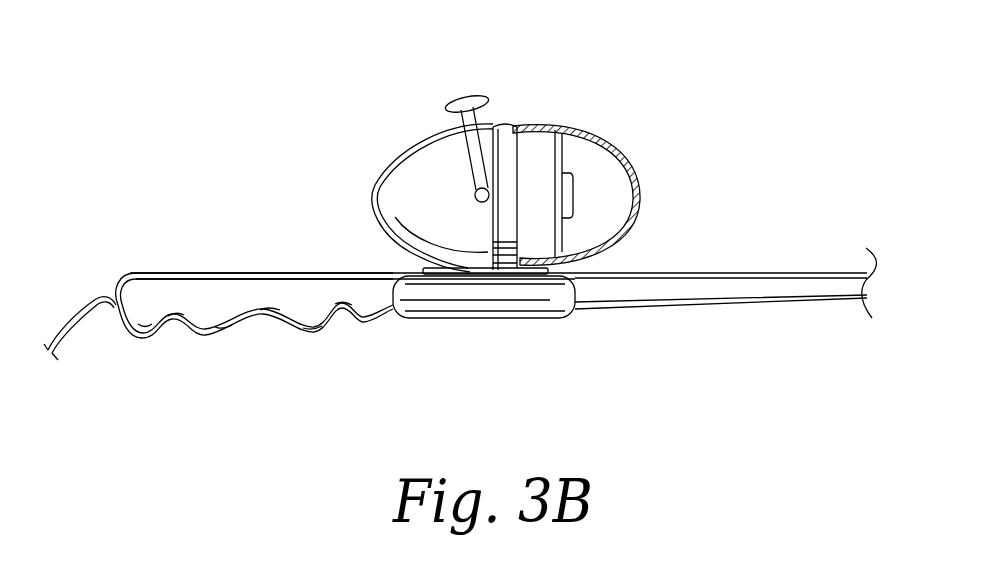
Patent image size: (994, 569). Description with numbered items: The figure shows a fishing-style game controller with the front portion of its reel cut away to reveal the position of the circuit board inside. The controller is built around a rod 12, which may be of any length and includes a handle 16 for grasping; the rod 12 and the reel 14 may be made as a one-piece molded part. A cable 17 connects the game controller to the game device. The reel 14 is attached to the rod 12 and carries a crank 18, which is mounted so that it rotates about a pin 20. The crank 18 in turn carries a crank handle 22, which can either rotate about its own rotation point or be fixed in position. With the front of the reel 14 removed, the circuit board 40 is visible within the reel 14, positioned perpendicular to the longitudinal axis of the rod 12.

The rod 12 is at (710, 285).
The reel 14 is at (507, 142).
The handle 16 is at (268, 293).
The cable 17 is at (92, 298).
The crank 18 is at (477, 152).
The pin 20 is at (481, 204).
The crank handle 22 is at (463, 102).
The circuit board 40 is at (560, 137).